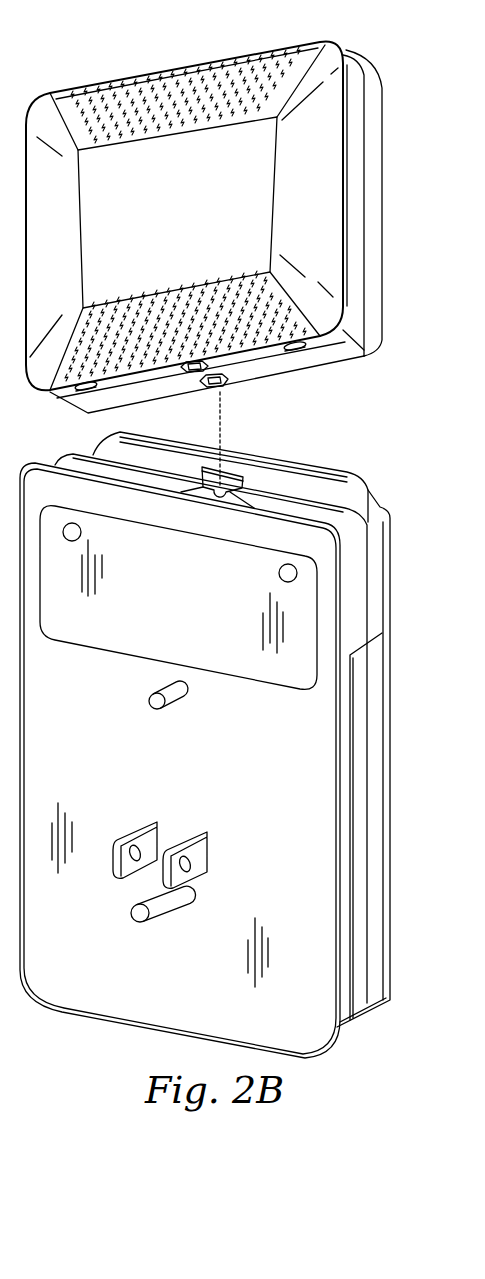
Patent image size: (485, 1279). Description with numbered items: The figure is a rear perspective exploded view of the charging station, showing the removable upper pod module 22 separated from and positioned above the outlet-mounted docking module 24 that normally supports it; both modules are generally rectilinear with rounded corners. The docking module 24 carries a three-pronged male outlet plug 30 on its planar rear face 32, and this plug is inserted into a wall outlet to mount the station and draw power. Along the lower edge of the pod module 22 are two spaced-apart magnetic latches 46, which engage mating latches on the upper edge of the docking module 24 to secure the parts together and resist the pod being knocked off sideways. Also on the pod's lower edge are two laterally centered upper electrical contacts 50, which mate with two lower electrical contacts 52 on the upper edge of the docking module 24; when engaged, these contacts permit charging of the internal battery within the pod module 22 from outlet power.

The pod module 22 is at (204, 252).
The docking module 24 is at (205, 760).
The male outlet plug 30 is at (136, 801).
The rear face 32 is at (237, 775).
The magnetic latches 46 is at (88, 392).
The upper electrical contacts 50 is at (213, 389).
The lower electrical contacts 52 is at (222, 487).